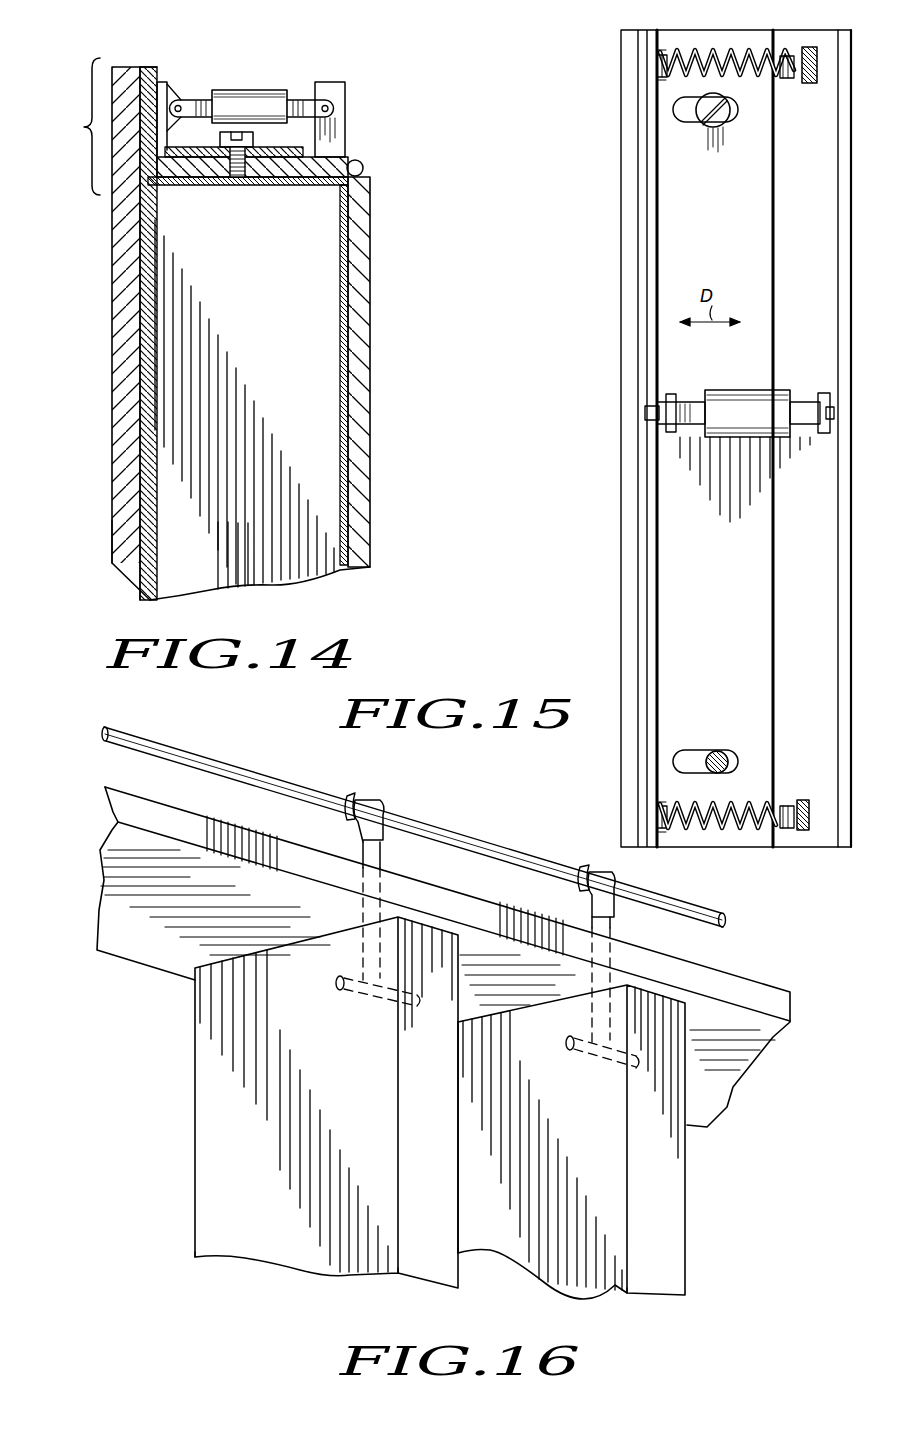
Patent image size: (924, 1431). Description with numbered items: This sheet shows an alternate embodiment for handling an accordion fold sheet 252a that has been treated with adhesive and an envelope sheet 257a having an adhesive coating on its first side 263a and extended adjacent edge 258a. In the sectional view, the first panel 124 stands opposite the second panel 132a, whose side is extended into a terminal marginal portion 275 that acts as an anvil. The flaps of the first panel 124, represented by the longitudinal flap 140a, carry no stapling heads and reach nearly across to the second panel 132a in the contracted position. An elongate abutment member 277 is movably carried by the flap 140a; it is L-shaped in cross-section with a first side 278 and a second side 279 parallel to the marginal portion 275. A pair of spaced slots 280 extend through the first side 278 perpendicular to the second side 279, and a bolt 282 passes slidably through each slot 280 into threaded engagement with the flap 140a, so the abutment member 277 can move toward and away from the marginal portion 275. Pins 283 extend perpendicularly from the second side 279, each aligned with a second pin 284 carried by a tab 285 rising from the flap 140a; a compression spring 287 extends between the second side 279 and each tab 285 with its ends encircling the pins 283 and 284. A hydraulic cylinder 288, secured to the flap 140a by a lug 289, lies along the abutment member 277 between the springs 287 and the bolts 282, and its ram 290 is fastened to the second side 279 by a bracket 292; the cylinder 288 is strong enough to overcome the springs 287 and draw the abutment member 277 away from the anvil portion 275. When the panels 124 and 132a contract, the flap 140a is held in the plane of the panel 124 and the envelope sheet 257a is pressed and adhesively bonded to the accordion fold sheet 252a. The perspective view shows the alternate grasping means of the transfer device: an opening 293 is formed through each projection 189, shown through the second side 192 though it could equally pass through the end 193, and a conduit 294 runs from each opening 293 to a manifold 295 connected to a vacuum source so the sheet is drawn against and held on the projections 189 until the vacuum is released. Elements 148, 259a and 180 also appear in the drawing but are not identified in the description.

In FIG. 14, the first panel 124 is at (370, 292).
In FIG. 14, the second panel 132a is at (112, 372).
In FIG. 14, the longitudinal flap 140a is at (336, 152).
In FIG. 14, the roller 148 is at (364, 167).
In FIG. 14, the accordion fold sheet 252a is at (260, 410).
In FIG. 14, the envelope sheet 257a is at (135, 500).
In FIG. 14, the edge 258a is at (152, 67).
In FIG. 14, the top edge 259a is at (148, 66).
In FIG. 14, the first side 263a is at (340, 302).
In FIG. 14, the terminal marginal portion 275 is at (70, 126).
In FIG. 15, the terminal marginal portion 275 is at (625, 282).
In FIG. 14, the abutment member 277 is at (292, 145).
In FIG. 15, the abutment member 277 is at (760, 256).
In FIG. 15, the first side 278 is at (768, 545).
In FIG. 15, the second side 279 is at (658, 256).
In FIG. 15, the slot 280 is at (690, 125).
In FIG. 15, the bolt 282 is at (725, 128).
In FIG. 15, the pin 283 is at (665, 52).
In FIG. 15, the pin 284 is at (788, 55).
In FIG. 15, the tab 285 is at (810, 47).
In FIG. 15, the compression spring 287 is at (712, 832).
In FIG. 14, the hydraulic cylinder 288 is at (238, 90).
In FIG. 15, the hydraulic cylinder 288 is at (776, 390).
In FIG. 14, the lug 289 is at (335, 82).
In FIG. 15, the lug 289 is at (718, 50).
In FIG. 14, the ram 290 is at (194, 99).
In FIG. 15, the ram 290 is at (697, 400).
In FIG. 15, the bracket 292 is at (655, 413).
In FIG. 16, the opening 293 is at (335, 986).
In FIG. 16, the conduit 294 is at (382, 850).
In FIG. 16, the manifold 295 is at (486, 848).
In FIG. 16, the shelf 180 is at (155, 958).
In FIG. 16, the projection 189 is at (280, 1262).
In FIG. 16, the second side 192 is at (200, 1100).
In FIG. 16, the end 193 is at (415, 1270).